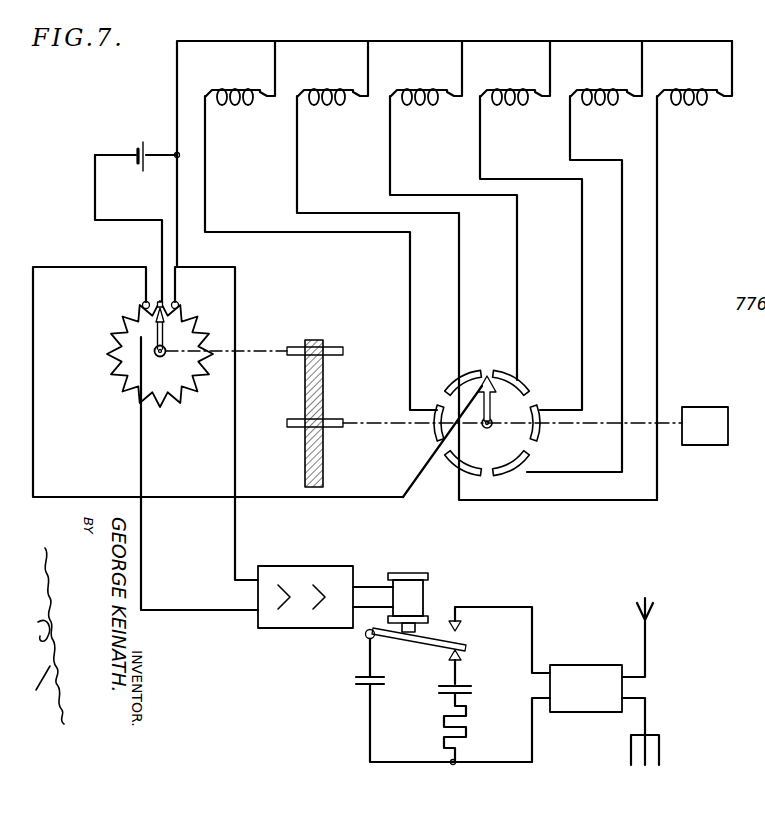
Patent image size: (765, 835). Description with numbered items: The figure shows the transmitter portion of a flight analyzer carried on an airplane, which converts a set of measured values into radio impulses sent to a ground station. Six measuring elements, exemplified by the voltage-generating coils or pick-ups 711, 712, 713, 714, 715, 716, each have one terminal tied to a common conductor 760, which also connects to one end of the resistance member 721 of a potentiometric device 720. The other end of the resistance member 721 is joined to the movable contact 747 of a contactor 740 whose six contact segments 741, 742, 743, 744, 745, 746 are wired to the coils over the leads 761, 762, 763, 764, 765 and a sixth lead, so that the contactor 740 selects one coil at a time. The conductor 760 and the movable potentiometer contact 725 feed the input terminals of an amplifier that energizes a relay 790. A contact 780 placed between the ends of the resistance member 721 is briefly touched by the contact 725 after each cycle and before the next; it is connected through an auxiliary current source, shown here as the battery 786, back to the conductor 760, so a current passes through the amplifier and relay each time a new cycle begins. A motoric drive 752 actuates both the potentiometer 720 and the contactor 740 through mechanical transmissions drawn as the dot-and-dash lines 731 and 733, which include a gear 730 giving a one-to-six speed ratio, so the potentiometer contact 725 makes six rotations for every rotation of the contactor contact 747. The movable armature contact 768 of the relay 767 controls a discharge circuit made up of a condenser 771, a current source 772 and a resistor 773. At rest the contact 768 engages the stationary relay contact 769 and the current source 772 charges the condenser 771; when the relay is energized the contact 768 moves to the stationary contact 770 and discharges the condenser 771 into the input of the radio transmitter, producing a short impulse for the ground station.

The common conductor 760 is at (217, 41).
The voltage-generating coil 711 is at (242, 88).
The voltage-generating coil 712 is at (326, 88).
The voltage-generating coil 713 is at (422, 88).
The voltage-generating coil 714 is at (514, 88).
The voltage-generating coil 715 is at (600, 88).
The voltage-generating coil 716 is at (690, 88).
The lead 761 is at (206, 177).
The lead 762 is at (298, 160).
The lead 763 is at (391, 147).
The lead 764 is at (481, 156).
The lead 765 is at (571, 136).
The battery 786 is at (139, 147).
The movable potentiometer contact 725 is at (141, 309).
The contact 780 is at (165, 304).
The resistance member 721 is at (118, 366).
The potentiometric device 720 is at (180, 381).
The mechanical transmission 731 is at (247, 347).
The gear 730 is at (325, 376).
The mechanical transmission 733 is at (364, 427).
The contactor 740 is at (500, 455).
The contact segment 741 is at (434, 440).
The contact segment 742 is at (452, 382).
The contact segment 743 is at (523, 382).
The contact segment 744 is at (540, 407).
The contact segment 745 is at (528, 464).
The contact segment 746 is at (468, 480).
The movable contact 747 is at (486, 370).
The motoric drive 752 is at (704, 406).
The relay 767 is at (410, 578).
The movable armature contact 768 is at (416, 654).
The stationary relay contact 769 is at (466, 657).
The stationary contact 770 is at (462, 627).
The condenser 771 is at (355, 680).
The current source 772 is at (466, 690).
The resistor 773 is at (466, 724).
The relay 790 is at (584, 712).